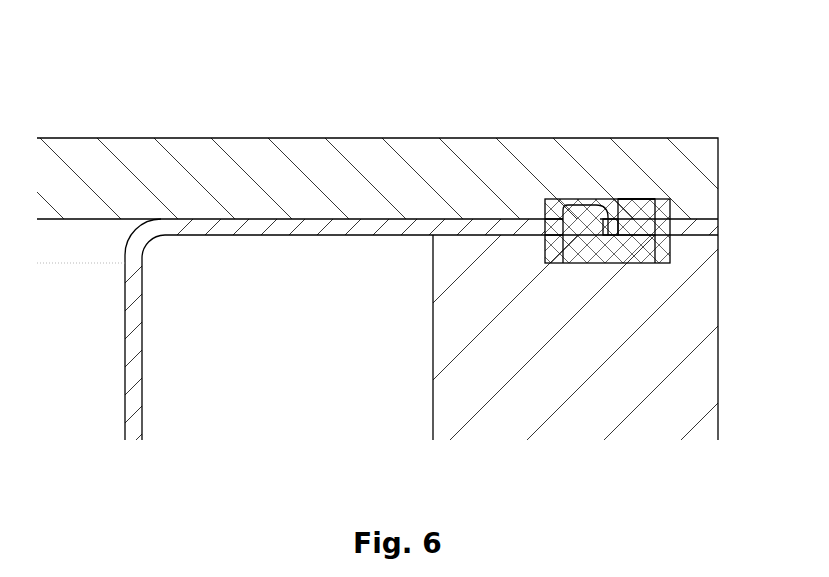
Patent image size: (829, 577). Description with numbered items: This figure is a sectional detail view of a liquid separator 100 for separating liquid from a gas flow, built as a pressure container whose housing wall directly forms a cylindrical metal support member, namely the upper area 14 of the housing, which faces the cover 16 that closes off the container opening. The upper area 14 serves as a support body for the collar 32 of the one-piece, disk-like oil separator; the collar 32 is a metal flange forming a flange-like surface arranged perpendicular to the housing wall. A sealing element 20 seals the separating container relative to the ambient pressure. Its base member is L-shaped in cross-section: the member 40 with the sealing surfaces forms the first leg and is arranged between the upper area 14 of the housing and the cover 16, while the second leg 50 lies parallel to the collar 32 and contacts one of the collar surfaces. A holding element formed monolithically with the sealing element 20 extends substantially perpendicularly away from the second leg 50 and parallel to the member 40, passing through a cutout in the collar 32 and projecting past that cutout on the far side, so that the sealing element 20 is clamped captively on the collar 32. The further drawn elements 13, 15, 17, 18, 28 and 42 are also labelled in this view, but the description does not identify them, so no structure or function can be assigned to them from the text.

The liquid separator 100 is at (690, 75).
The circuit carrier 13 is at (623, 264).
The upper area of the housing 14 is at (532, 398).
The cavity 15 is at (548, 254).
The cover 16 is at (330, 183).
The opening 17 is at (549, 199).
The recess 18 is at (645, 199).
The channel 42 is at (645, 199).
The sealing element 20 is at (704, 226).
The sensor element 28 is at (590, 233).
The collar 32 is at (305, 234).
The member with sealing surfaces 40 is at (647, 226).
The second leg 50 is at (615, 256).